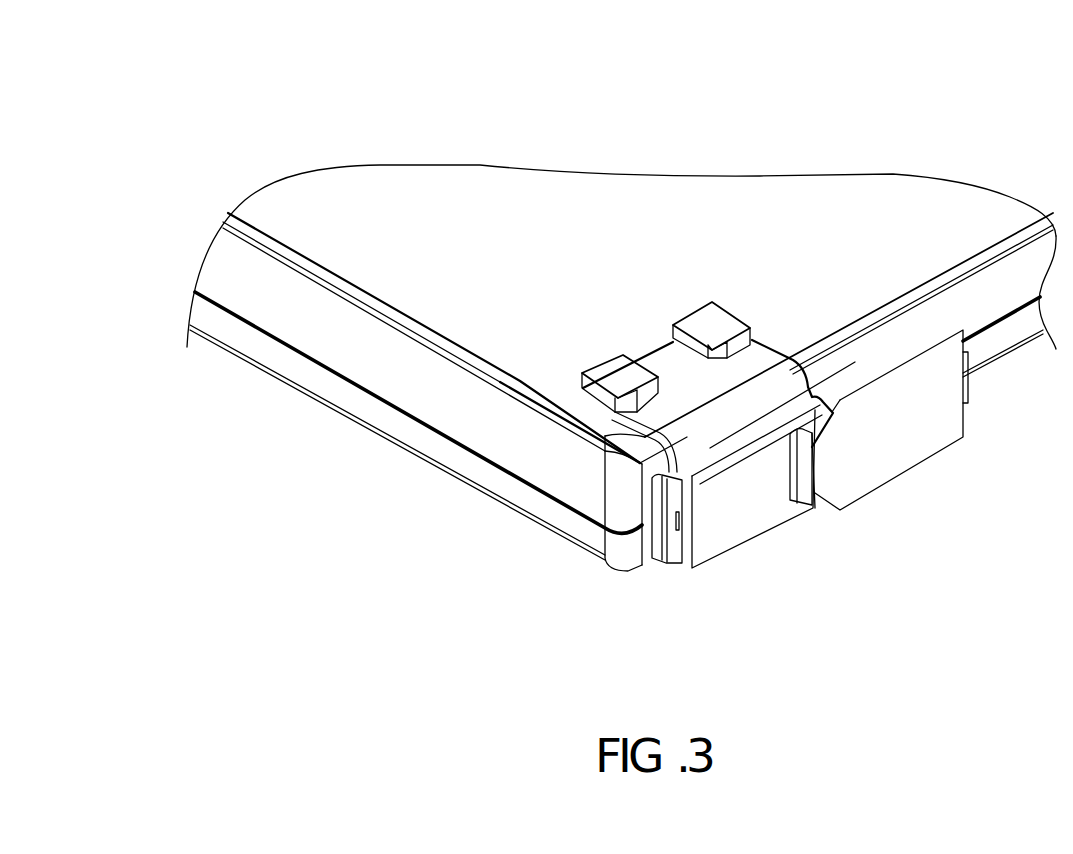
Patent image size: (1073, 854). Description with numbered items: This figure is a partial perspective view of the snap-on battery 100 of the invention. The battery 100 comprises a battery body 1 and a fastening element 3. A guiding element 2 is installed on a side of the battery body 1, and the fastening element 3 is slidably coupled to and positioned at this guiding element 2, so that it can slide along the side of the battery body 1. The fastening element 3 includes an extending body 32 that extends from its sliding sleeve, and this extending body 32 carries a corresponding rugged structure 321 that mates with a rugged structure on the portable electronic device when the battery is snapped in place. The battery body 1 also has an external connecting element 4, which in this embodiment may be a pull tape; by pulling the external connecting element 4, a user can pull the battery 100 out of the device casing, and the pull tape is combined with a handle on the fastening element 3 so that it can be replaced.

The battery 100 is at (718, 63).
The battery body 1 is at (479, 203).
The guiding element 2 is at (661, 536).
The fastening element 3 is at (747, 532).
The extending body 32 is at (657, 417).
The corresponding rugged structure 321 is at (662, 362).
The external connecting element 4 is at (913, 459).